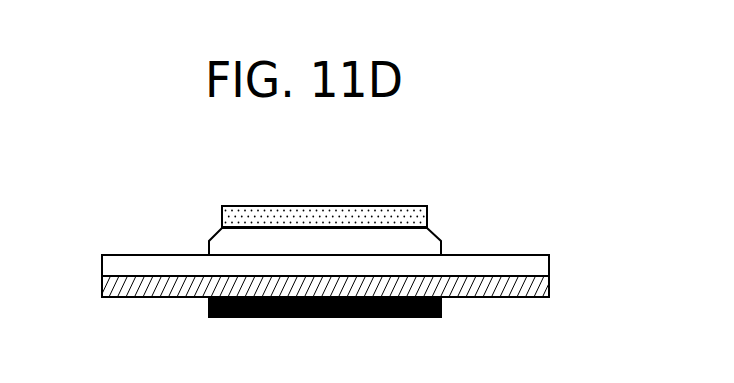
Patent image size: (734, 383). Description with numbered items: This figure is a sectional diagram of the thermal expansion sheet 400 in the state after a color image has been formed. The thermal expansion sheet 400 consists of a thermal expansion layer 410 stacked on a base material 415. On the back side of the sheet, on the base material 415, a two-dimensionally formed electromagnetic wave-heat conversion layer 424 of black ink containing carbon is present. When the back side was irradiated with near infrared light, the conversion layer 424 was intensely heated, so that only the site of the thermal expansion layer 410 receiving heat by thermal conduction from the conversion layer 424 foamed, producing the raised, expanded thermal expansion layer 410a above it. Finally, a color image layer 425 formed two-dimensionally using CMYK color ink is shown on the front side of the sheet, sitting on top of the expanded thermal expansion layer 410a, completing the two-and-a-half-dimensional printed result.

The thermal expansion sheet 400 is at (637, 225).
The thermal expansion layer 410 is at (550, 268).
The base material 415 is at (550, 288).
The expanded thermal expansion layer 410a is at (437, 238).
The color image layer 425 is at (413, 206).
The electromagnetic wave-heat conversion layer 424 is at (441, 302).